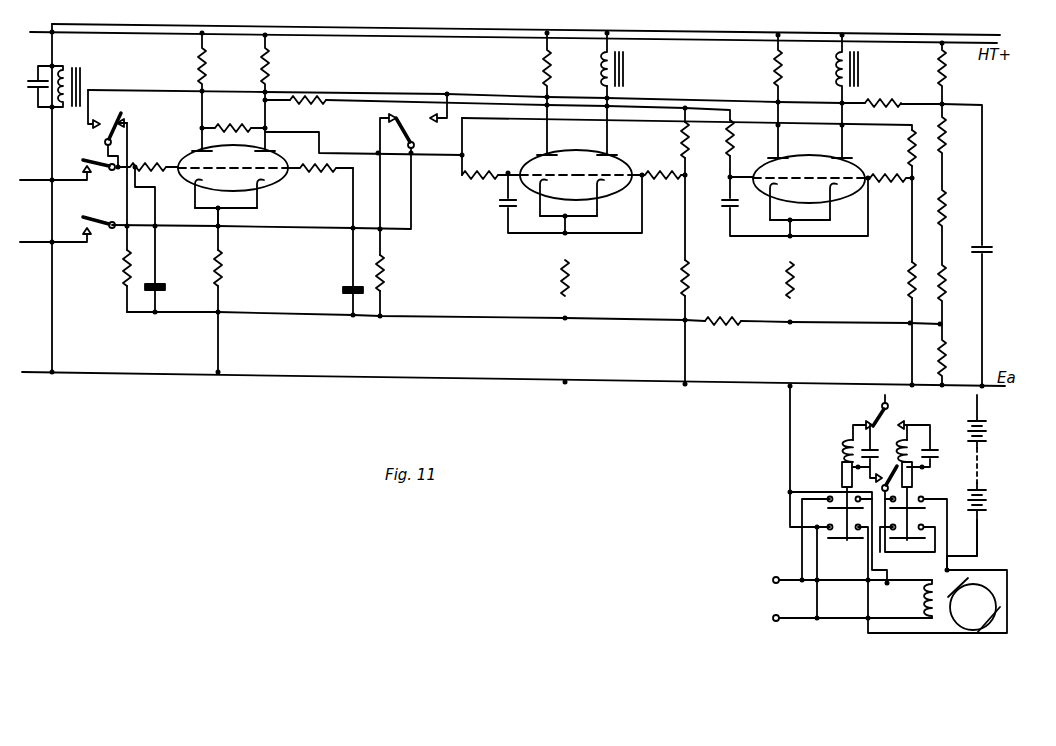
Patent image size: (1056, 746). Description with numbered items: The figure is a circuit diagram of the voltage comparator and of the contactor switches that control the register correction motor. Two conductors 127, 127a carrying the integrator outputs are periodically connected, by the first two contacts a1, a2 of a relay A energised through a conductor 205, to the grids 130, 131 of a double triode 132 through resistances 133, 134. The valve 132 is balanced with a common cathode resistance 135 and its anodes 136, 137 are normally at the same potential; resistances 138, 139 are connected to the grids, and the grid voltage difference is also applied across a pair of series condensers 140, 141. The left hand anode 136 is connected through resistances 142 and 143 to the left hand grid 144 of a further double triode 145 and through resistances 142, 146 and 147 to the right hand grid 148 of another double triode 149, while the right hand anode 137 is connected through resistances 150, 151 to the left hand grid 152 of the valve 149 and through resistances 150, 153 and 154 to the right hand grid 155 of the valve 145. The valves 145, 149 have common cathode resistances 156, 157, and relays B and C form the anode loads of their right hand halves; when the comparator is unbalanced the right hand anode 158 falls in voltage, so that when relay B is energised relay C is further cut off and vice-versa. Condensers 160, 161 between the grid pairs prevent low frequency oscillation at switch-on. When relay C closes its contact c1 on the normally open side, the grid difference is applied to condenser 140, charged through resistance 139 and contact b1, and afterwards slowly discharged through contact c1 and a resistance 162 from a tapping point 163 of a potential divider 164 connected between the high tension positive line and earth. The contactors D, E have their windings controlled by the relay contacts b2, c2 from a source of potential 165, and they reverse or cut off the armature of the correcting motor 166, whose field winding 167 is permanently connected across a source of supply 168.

The conductor 205 is at (177, 32).
The conductor 127 is at (30, 188).
The conductor 127a is at (26, 243).
The grid 130 is at (190, 195).
The grid 131 is at (285, 173).
The double triode 132 is at (265, 196).
The resistance 133 is at (155, 163).
The resistance 134 is at (323, 153).
The common cathode resistance 135 is at (224, 280).
The anode 136 is at (198, 145).
The anode 137 is at (282, 145).
The resistance 138 is at (123, 270).
The resistance 139 is at (385, 281).
The condenser 140 is at (165, 287).
The condenser 141 is at (343, 290).
The resistance 142 is at (233, 115).
The resistance 143 is at (490, 180).
The grid 144 is at (539, 162).
The double triode 145 is at (627, 198).
The resistance 146 is at (908, 148).
The resistance 147 is at (894, 186).
The grid 148 is at (840, 205).
The double triode 149 is at (776, 157).
The resistance 150 is at (314, 92).
The resistance 151 is at (722, 158).
The grid 152 is at (768, 205).
The resistance 153 is at (688, 157).
The resistance 154 is at (660, 182).
The grid 155 is at (620, 172).
The common cathode resistance 156 is at (570, 278).
The common cathode resistance 157 is at (797, 285).
The anode 158 is at (600, 152).
The condenser 160 is at (503, 212).
The condenser 161 is at (723, 209).
The resistance 162 is at (888, 102).
The tapping point 163 is at (947, 101).
The potential divider 164 is at (948, 68).
The source of potential 165 is at (976, 465).
The correcting motor 166 is at (965, 596).
The field winding 167 is at (918, 597).
The source of supply 168 is at (771, 613).
The relay A is at (55, 73).
The relay B is at (619, 59).
The relay C is at (852, 96).
The contactor D is at (839, 490).
The contactor E is at (921, 490).
The relay contact a1 is at (90, 160).
The relay contact a2 is at (88, 218).
The relay contact b1 is at (411, 129).
The relay contact b2 is at (907, 480).
The relay contact c1 is at (121, 115).
The relay contact c2 is at (892, 415).